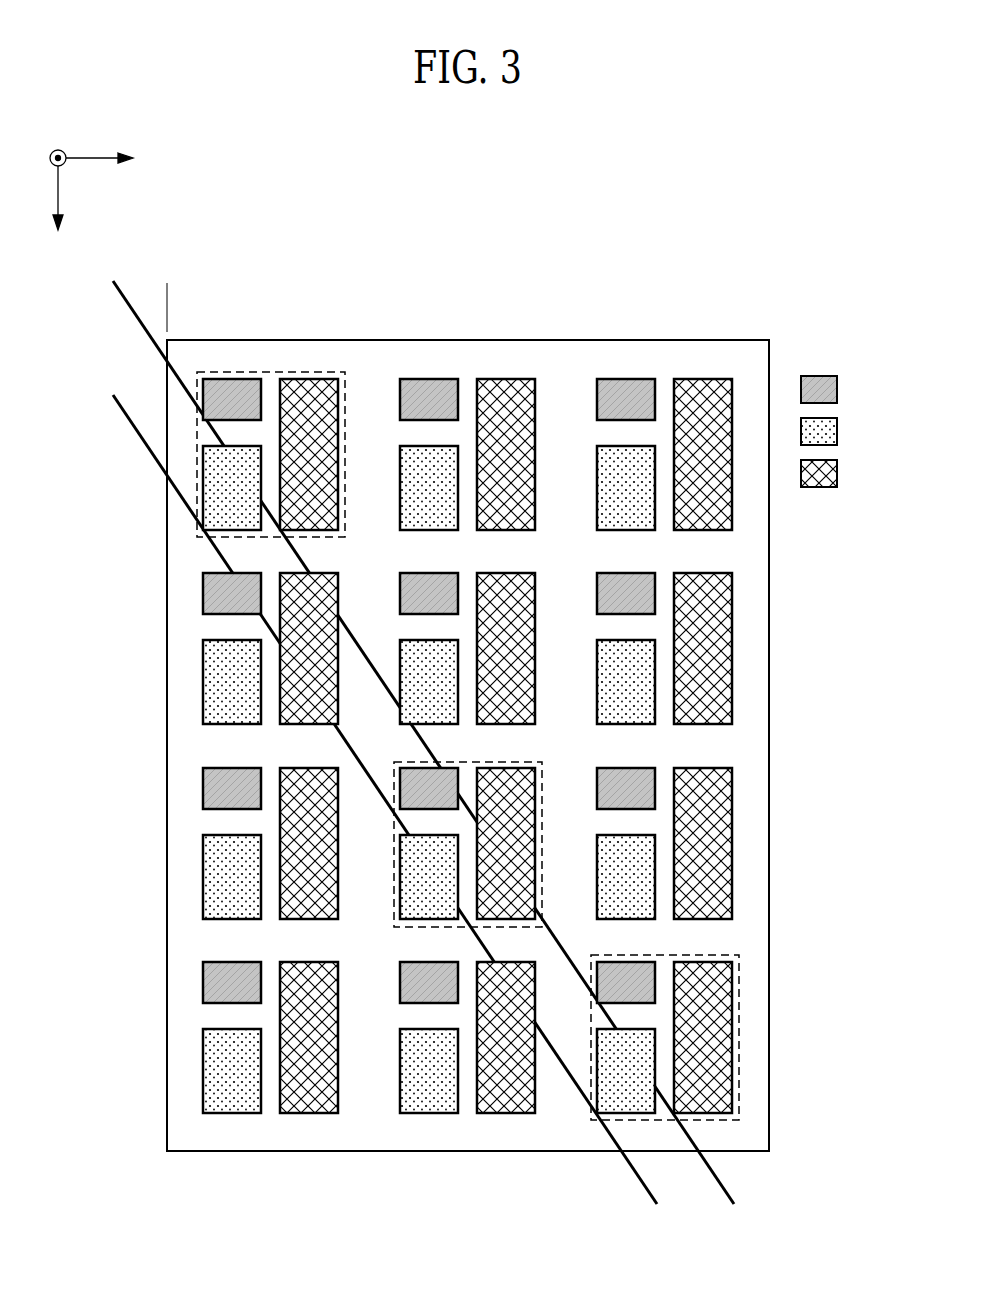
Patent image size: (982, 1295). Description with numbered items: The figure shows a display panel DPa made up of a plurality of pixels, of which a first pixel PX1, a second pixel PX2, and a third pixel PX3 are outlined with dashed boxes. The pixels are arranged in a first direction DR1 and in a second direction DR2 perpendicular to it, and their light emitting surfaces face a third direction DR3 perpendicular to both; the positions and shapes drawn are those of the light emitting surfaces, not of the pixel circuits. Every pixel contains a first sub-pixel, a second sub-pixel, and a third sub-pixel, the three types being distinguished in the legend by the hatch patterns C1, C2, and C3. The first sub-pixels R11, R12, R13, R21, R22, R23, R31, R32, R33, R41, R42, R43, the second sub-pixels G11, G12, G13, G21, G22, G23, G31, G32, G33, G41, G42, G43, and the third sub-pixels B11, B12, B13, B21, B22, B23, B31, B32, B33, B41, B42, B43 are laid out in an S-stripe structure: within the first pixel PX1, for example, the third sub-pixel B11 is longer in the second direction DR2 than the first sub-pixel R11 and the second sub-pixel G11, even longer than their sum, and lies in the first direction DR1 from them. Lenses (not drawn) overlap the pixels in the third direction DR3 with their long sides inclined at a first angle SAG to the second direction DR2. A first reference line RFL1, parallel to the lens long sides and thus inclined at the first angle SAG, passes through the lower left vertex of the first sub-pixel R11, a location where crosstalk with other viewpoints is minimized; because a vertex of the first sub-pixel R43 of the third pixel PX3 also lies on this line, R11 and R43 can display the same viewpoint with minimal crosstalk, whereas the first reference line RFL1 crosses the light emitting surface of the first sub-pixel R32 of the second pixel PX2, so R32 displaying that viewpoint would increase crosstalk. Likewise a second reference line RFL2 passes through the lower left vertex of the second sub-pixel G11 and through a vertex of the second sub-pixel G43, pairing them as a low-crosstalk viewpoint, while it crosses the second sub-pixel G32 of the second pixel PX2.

The first direction DR1 is at (120, 158).
The second direction DR2 is at (59, 214).
The third direction DR3 is at (59, 143).
The display panel DPa is at (375, 340).
The first angle SAG is at (167, 313).
The first reference line RFL1 is at (152, 338).
The second reference line RFL2 is at (152, 452).
The first pixel PX1 is at (270, 370).
The second pixel PX2 is at (517, 762).
The third pixel PX3 is at (739, 1010).
The first color (red) sub-pixel C1 is at (840, 390).
The second color (green) sub-pixel C2 is at (840, 433).
The third color (blue) sub-pixel C3 is at (840, 475).
The first sub-pixel R11 is at (232, 399).
The second sub-pixel G11 is at (232, 488).
The third sub-pixel B11 is at (309, 454).
The first sub-pixel R12 is at (429, 399).
The second sub-pixel G12 is at (429, 488).
The third sub-pixel B12 is at (506, 454).
The first sub-pixel R13 is at (626, 399).
The second sub-pixel G13 is at (626, 488).
The third sub-pixel B13 is at (703, 454).
The first sub-pixel R21 is at (232, 593).
The second sub-pixel G21 is at (232, 682).
The third sub-pixel B21 is at (309, 648).
The first sub-pixel R22 is at (429, 593).
The second sub-pixel G22 is at (429, 682).
The third sub-pixel B22 is at (506, 648).
The first sub-pixel R23 is at (626, 593).
The second sub-pixel G23 is at (626, 682).
The third sub-pixel B23 is at (703, 648).
The first sub-pixel R31 is at (232, 788).
The second sub-pixel G31 is at (232, 877).
The third sub-pixel B31 is at (309, 843).
The first sub-pixel R32 is at (429, 788).
The second sub-pixel G32 is at (429, 877).
The third sub-pixel B32 is at (506, 843).
The first sub-pixel R33 is at (626, 788).
The second sub-pixel G33 is at (626, 877).
The third sub-pixel B33 is at (703, 843).
The first sub-pixel R41 is at (232, 982).
The second sub-pixel G41 is at (232, 1071).
The third sub-pixel B41 is at (309, 1037).
The first sub-pixel R42 is at (429, 982).
The second sub-pixel G42 is at (429, 1071).
The third sub-pixel B42 is at (506, 1037).
The first sub-pixel R43 is at (626, 982).
The second sub-pixel G43 is at (626, 1071).
The third sub-pixel B43 is at (703, 1037).